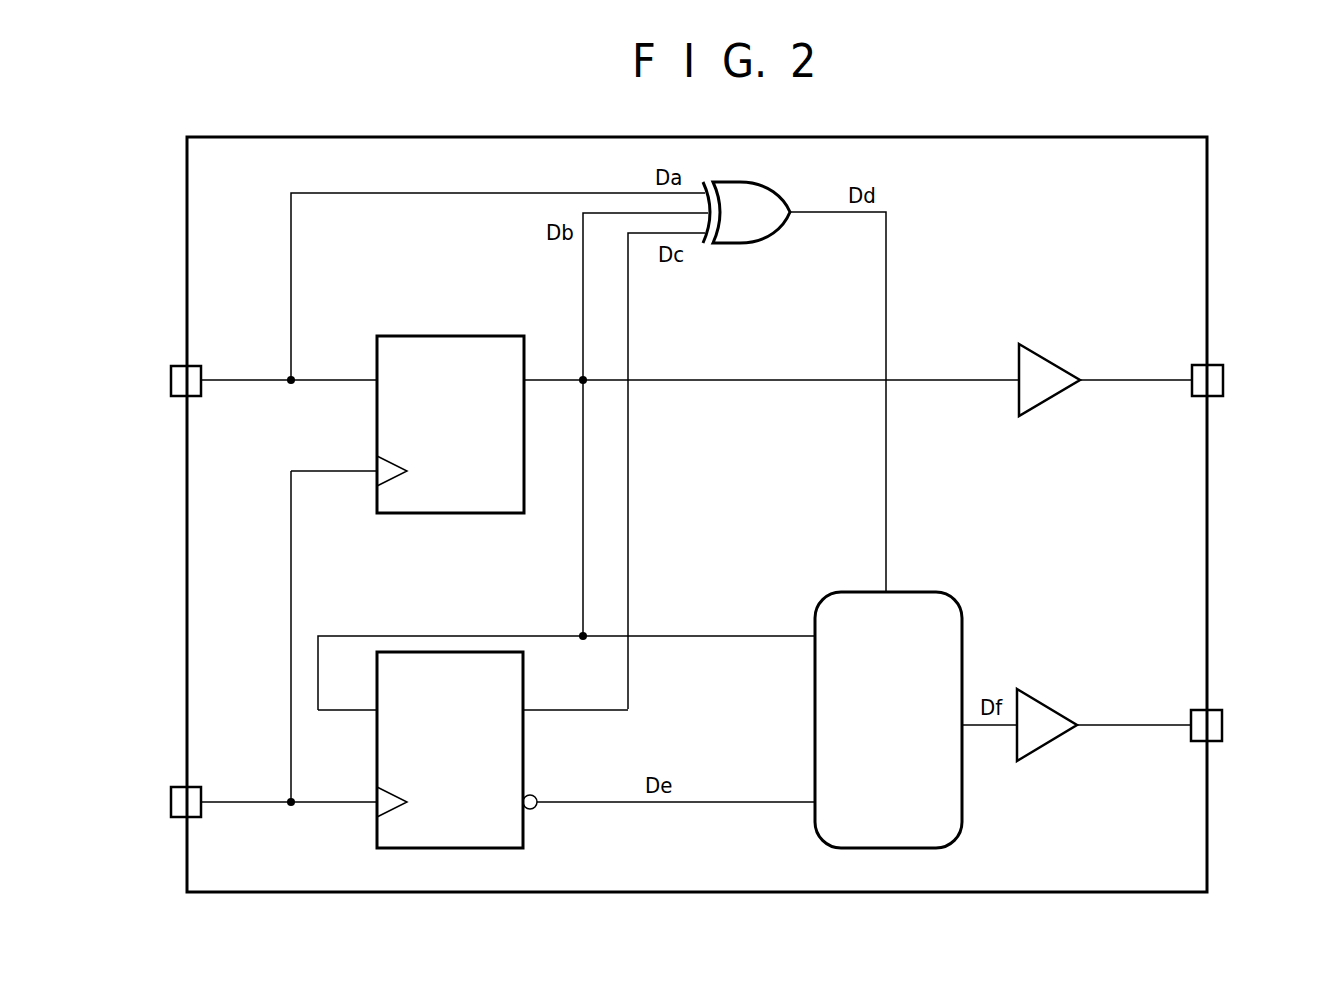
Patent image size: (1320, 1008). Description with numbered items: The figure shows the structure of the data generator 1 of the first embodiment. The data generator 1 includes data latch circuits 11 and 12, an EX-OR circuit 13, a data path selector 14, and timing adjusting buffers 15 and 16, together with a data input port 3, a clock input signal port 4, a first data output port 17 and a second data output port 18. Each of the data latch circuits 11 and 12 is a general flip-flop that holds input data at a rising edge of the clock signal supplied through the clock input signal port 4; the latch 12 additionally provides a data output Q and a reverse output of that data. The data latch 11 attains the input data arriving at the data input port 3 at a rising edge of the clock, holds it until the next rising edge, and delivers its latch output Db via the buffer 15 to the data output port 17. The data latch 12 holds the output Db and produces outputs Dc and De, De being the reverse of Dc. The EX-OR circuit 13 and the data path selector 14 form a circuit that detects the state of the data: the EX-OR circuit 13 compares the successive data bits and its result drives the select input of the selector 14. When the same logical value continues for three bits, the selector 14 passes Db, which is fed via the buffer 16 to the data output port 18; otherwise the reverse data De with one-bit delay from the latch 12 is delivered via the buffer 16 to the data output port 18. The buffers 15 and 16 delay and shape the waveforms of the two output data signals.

The data generator 1 is at (427, 137).
The data input port DIN 3 is at (171, 366).
The clock input signal port CLOCK 4 is at (171, 787).
The data latch circuit 11 is at (450, 336).
The data latch circuit 12 is at (523, 832).
The EX-OR circuit 13 is at (740, 245).
The data path selector 14 is at (903, 592).
The timing adjusting buffer 15 is at (1048, 358).
The timing adjusting buffer 16 is at (1048, 703).
The data output port DOUTA 17 is at (1224, 365).
The data output port DOUTB 18 is at (1222, 710).